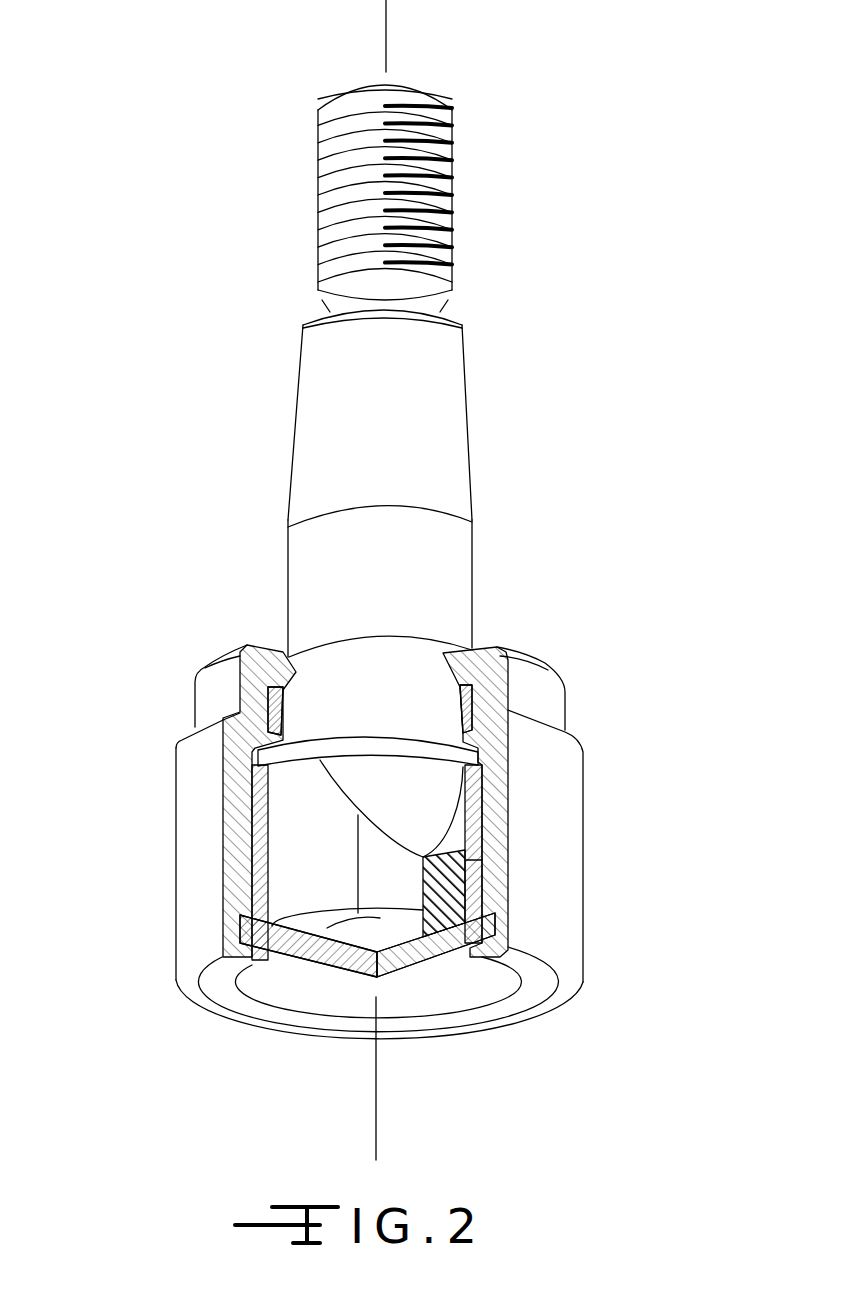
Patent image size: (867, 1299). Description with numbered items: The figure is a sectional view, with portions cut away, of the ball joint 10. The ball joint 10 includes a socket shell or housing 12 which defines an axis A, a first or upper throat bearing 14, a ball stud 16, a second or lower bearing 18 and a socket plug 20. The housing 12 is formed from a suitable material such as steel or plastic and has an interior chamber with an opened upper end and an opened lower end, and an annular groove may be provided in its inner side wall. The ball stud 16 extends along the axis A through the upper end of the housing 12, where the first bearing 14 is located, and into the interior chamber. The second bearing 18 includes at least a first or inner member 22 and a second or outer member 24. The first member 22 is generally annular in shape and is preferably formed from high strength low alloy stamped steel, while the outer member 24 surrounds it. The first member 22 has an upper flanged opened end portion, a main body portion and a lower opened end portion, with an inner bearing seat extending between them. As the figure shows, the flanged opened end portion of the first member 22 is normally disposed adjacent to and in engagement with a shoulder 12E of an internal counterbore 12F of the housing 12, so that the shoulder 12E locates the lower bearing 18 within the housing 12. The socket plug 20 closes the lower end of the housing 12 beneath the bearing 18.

The axis A is at (387, 37).
The ball joint 10 is at (160, 460).
The housing 12 is at (583, 833).
The shoulder 12E is at (250, 782).
The internal counterbore 12F is at (258, 836).
The first bearing 14 is at (470, 660).
The ball stud 16 is at (432, 372).
The second bearing 18 is at (490, 800).
The socket plug 20 is at (413, 957).
The first member 22 is at (473, 867).
The second member 24 is at (447, 905).